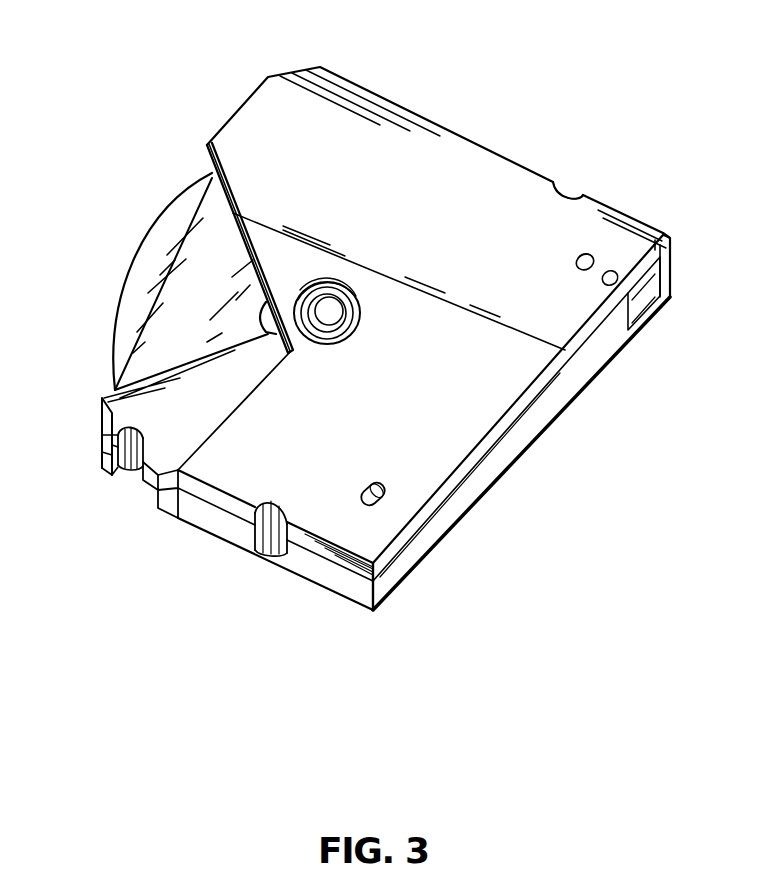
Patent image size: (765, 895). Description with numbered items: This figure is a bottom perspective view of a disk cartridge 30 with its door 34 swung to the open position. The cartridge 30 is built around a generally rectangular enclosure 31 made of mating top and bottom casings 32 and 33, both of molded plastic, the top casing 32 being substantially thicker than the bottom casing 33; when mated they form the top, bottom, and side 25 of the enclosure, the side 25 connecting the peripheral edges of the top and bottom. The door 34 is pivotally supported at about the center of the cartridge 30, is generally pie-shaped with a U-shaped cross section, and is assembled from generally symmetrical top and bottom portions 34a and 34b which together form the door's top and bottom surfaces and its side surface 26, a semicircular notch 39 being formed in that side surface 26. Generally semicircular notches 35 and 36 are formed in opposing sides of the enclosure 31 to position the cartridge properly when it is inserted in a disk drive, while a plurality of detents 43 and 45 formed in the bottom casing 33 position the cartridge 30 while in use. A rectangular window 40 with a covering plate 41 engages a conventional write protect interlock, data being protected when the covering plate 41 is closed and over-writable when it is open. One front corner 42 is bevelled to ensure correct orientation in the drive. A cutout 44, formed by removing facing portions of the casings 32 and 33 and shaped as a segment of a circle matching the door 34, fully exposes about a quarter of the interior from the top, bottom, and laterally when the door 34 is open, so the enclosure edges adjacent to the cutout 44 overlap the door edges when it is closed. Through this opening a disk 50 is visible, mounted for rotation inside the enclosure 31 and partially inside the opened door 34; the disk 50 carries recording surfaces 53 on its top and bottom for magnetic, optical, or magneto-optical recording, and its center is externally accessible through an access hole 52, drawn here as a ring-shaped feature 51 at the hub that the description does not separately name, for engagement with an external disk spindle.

The side 25 is at (233, 117).
The side surface 26 is at (100, 448).
The disk cartridge 30 is at (487, 521).
The enclosure 31 is at (376, 615).
The top casing 32 is at (528, 432).
The bottom casing 33 is at (553, 373).
The door 34 is at (100, 413).
The top portion 34a is at (110, 462).
The bottom portion 34b is at (107, 440).
The notch 35 is at (258, 552).
The notch 36 is at (556, 187).
The semicircular notch 39 is at (123, 470).
The rectangular window 40 is at (653, 312).
The covering plate 41 is at (647, 292).
The front corner 42 is at (291, 71).
The detent 43 is at (592, 255).
The cutout 44 is at (663, 229).
The detent 45 is at (360, 498).
The disk 50 is at (135, 257).
The ring 51 is at (358, 313).
The access hole 52 is at (327, 281).
The recording surfaces 53 is at (128, 313).